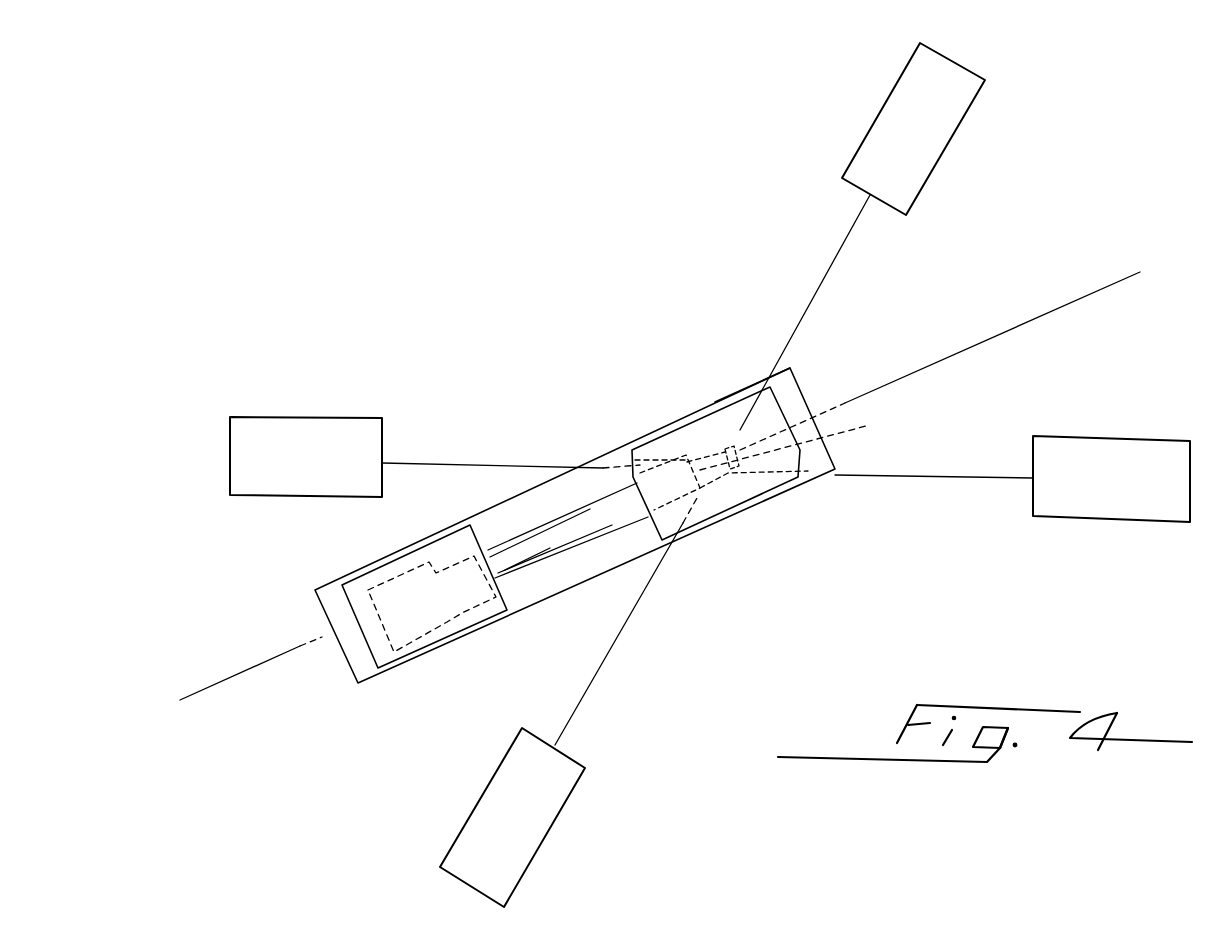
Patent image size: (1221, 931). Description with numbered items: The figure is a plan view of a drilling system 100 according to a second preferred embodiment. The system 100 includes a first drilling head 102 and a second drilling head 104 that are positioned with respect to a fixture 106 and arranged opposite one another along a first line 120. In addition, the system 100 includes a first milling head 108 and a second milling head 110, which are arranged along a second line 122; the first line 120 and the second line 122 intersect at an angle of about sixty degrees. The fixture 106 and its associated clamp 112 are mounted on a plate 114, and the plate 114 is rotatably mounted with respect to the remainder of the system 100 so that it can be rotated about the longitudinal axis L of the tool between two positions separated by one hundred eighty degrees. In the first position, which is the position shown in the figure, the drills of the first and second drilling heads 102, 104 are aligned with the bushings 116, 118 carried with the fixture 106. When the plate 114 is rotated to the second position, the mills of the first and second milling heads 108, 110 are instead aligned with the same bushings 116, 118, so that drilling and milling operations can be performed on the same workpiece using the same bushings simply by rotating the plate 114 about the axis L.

The drilling system 100 is at (575, 481).
The first drilling head 102 is at (320, 417).
The second drilling head 104 is at (1142, 437).
The fixture 106 is at (733, 497).
The first milling head 108 is at (552, 822).
The second milling head 110 is at (986, 76).
The clamp 112 is at (358, 670).
The plate 114 is at (733, 394).
The bushing 116 is at (646, 415).
The bushing 118 is at (652, 441).
The first line 120 is at (940, 478).
The second line 122 is at (840, 243).
The longitudinal axis L is at (1085, 293).